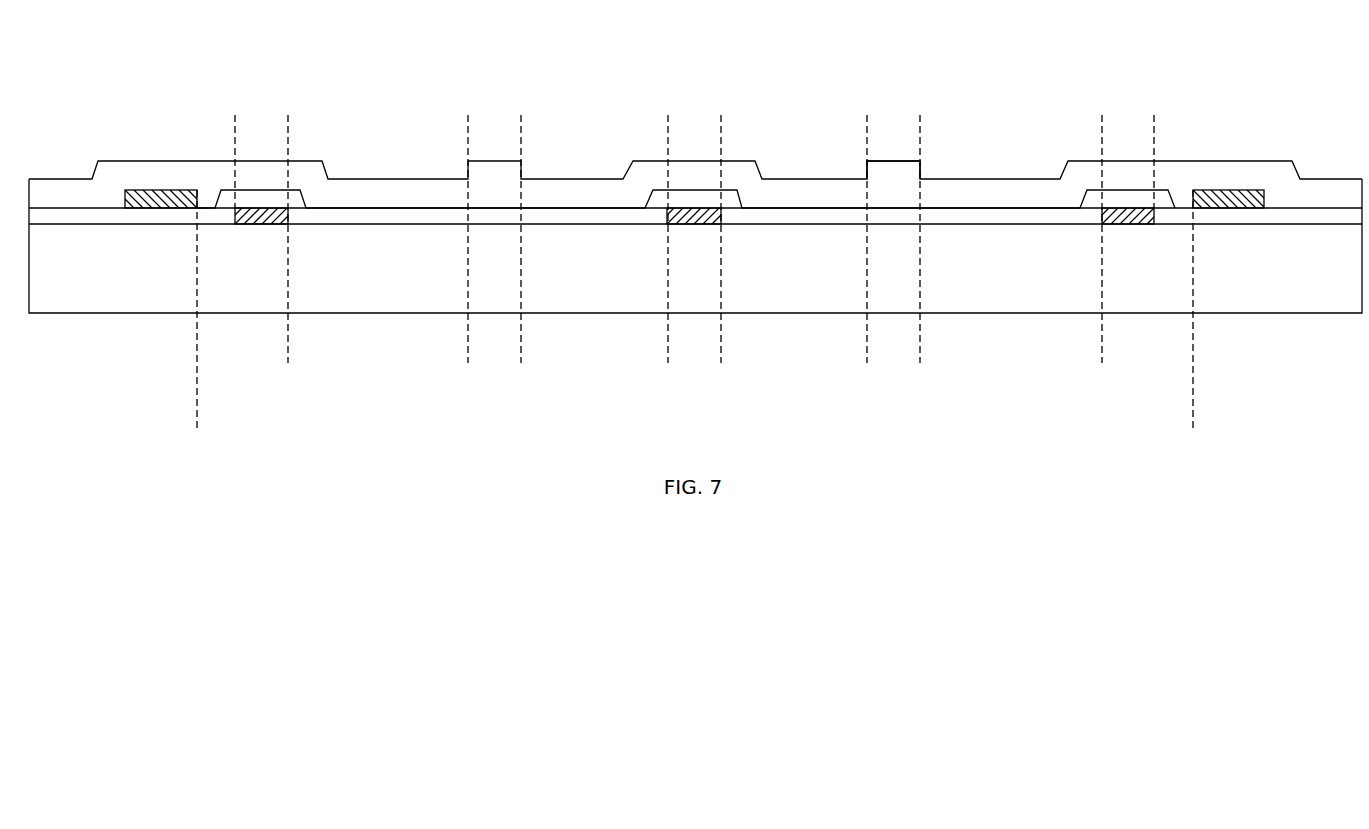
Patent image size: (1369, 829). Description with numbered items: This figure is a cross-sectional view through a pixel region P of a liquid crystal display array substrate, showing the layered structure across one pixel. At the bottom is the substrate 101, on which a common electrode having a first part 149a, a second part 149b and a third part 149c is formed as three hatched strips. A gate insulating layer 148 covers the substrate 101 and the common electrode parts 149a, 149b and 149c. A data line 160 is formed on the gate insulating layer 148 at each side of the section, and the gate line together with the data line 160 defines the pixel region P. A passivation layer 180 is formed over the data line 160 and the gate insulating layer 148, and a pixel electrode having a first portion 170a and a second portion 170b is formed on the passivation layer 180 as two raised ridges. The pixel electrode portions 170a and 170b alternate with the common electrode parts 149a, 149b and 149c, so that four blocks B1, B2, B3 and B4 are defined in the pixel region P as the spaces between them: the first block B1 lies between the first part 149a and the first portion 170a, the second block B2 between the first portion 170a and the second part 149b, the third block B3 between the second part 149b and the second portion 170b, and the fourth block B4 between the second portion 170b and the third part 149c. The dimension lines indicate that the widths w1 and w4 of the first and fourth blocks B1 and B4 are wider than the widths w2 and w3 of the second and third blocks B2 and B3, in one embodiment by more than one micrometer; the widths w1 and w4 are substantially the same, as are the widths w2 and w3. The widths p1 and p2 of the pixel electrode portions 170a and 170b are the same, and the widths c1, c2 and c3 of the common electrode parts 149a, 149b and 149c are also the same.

The substrate 101 is at (1345, 277).
The gate insulating layer 148 is at (390, 217).
The passivation layer 180 is at (585, 192).
The first portion of the pixel electrode 170a is at (503, 168).
The second portion of the pixel electrode 170b is at (920, 158).
The data line 160 is at (165, 190).
The first part of the common electrode 149a is at (276, 207).
The second part of the common electrode 149b is at (716, 205).
The third part of the common electrode 149c is at (1133, 205).
The first block B1 is at (398, 168).
The second block B2 is at (573, 173).
The third block B3 is at (822, 171).
The fourth block B4 is at (1003, 174).
The width of the first part of the common electrode c1 is at (235, 122).
The width of the second part of the common electrode c2 is at (668, 122).
The width of the third part of the common electrode c3 is at (1102, 121).
The width of the first portion of the pixel electrode p1 is at (468, 122).
The width of the second portion of the pixel electrode p2 is at (867, 122).
The width of the first block w1 is at (288, 352).
The width of the second block w2 is at (668, 352).
The width of the third block w3 is at (721, 352).
The width of the fourth block w4 is at (1102, 352).
The pixel region P is at (197, 402).